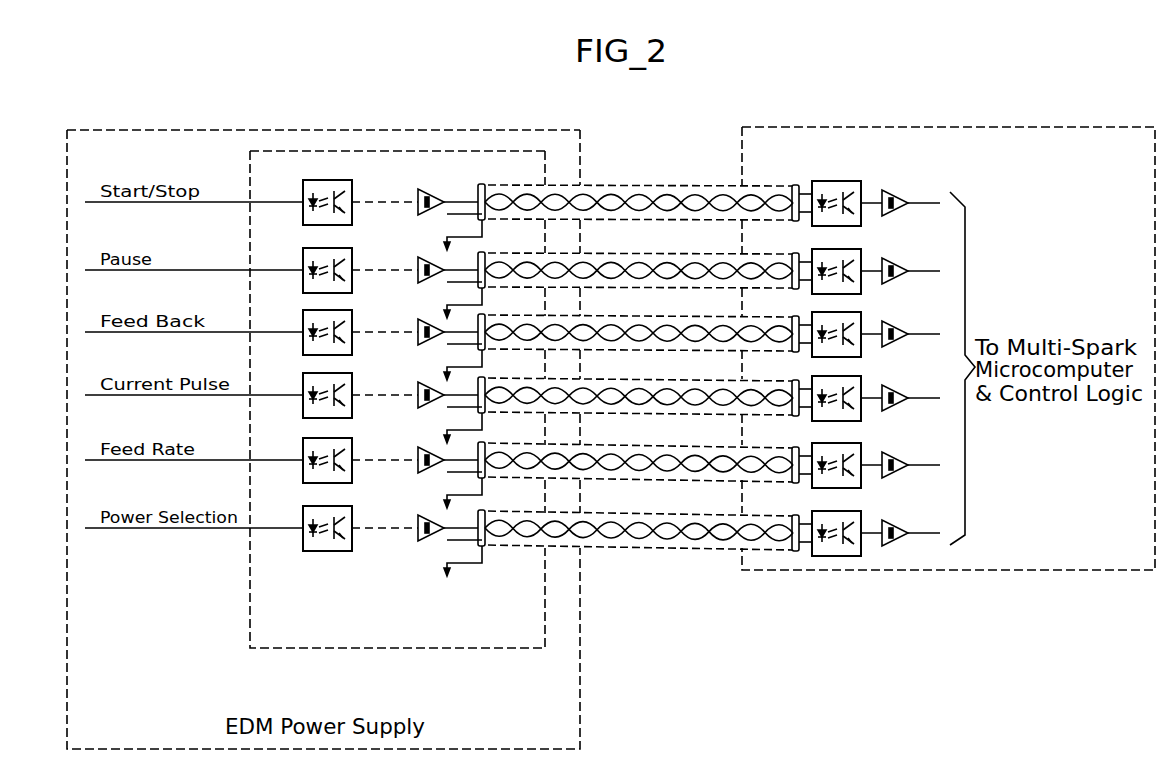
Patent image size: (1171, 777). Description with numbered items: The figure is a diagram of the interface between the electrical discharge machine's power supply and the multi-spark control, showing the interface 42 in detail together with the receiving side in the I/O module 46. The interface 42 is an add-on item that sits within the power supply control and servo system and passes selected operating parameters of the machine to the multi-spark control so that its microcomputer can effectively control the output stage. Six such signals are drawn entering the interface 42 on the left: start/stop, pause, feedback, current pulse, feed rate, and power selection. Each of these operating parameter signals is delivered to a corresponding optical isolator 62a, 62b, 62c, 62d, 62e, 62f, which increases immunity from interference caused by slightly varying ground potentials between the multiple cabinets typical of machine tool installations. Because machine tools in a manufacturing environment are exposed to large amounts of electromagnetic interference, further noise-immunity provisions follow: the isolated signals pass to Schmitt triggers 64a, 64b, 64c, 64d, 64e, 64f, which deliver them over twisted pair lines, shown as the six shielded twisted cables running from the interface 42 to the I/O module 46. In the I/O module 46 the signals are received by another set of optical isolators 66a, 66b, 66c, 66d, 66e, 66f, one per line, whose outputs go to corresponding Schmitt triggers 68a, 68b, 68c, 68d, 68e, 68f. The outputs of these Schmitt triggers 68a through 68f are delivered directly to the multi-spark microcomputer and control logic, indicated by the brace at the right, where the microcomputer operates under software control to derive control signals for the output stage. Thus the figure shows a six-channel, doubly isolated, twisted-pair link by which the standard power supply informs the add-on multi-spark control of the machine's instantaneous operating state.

The interface 42 is at (483, 151).
The I/O module 46 is at (780, 129).
The optical isolator 62a is at (352, 187).
The optical isolator 62b is at (352, 255).
The optical isolator 62c is at (352, 317).
The optical isolator 62d is at (352, 380).
The optical isolator 62e is at (352, 445).
The optical isolator 62f is at (352, 513).
The Schmitt trigger 64a is at (430, 189).
The Schmitt trigger 64b is at (430, 258).
The Schmitt trigger 64c is at (430, 320).
The Schmitt trigger 64d is at (430, 383).
The Schmitt trigger 64e is at (430, 448).
The Schmitt trigger 64f is at (430, 516).
The optical isolator 66a is at (822, 181).
The optical isolator 66b is at (828, 249).
The optical isolator 66c is at (832, 312).
The optical isolator 66d is at (834, 376).
The optical isolator 66e is at (834, 443).
The optical isolator 66f is at (836, 511).
The Schmitt trigger 68a is at (906, 188).
The Schmitt trigger 68b is at (897, 264).
The Schmitt trigger 68c is at (897, 327).
The Schmitt trigger 68d is at (897, 391).
The Schmitt trigger 68e is at (897, 458).
The Schmitt trigger 68f is at (897, 526).